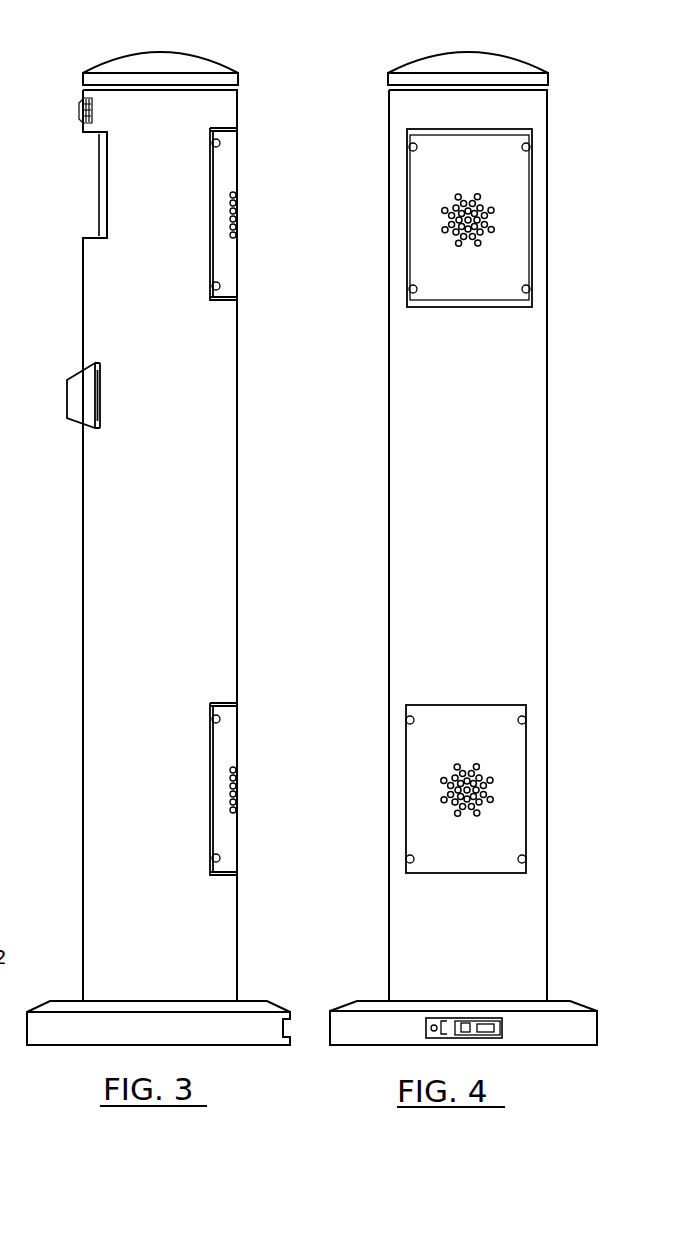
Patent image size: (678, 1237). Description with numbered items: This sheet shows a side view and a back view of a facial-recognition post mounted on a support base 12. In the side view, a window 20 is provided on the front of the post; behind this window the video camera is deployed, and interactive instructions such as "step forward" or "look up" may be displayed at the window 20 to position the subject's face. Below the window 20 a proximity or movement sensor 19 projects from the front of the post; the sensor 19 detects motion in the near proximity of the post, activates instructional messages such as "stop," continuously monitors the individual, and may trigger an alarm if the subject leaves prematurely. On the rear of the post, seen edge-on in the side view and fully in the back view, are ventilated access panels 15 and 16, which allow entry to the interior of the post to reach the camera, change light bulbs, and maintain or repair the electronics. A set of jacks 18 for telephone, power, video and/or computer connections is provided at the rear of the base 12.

In FIG. 3, the support base 12 is at (235, 1020).
In FIG. 4, the support base 12 is at (380, 1027).
In FIG. 3, the ventilated access panel 15 is at (227, 251).
In FIG. 4, the ventilated access panel 15 is at (503, 240).
In FIG. 3, the ventilated access panel 16 is at (222, 748).
In FIG. 4, the ventilated access panel 16 is at (508, 792).
In FIG. 4, the set of jacks 18 is at (463, 1020).
In FIG. 3, the proximity or movement sensor 19 is at (67, 400).
In FIG. 3, the window 20 is at (97, 180).